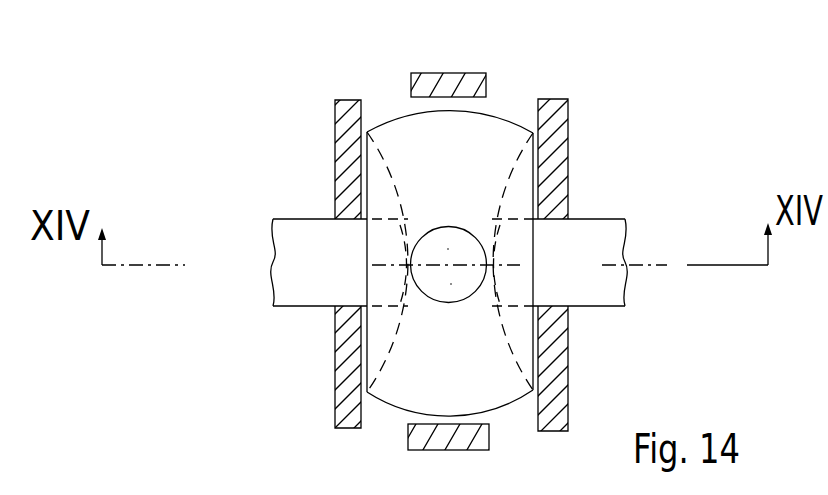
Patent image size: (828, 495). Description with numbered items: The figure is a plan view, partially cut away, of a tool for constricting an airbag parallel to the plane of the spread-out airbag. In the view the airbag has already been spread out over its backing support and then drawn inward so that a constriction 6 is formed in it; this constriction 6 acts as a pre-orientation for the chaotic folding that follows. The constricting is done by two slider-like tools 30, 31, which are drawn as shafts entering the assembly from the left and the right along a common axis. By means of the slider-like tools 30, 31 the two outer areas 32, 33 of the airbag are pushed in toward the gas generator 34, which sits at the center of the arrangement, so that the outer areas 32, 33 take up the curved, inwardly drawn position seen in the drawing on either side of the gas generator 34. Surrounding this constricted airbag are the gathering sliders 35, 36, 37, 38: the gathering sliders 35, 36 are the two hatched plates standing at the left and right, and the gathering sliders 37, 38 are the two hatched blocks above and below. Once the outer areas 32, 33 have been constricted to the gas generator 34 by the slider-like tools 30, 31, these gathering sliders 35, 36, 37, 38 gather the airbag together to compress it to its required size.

The constriction 6 is at (377, 196).
The slider-like tool 30 is at (308, 258).
The slider-like tool 31 is at (605, 255).
The outer area of the airbag 32 is at (392, 170).
The outer area of the airbag 33 is at (497, 208).
The gas generator 34 is at (467, 276).
The gathering slider 35 is at (345, 350).
The gathering slider 36 is at (557, 132).
The gathering slider 37 is at (420, 80).
The gathering slider 38 is at (473, 437).